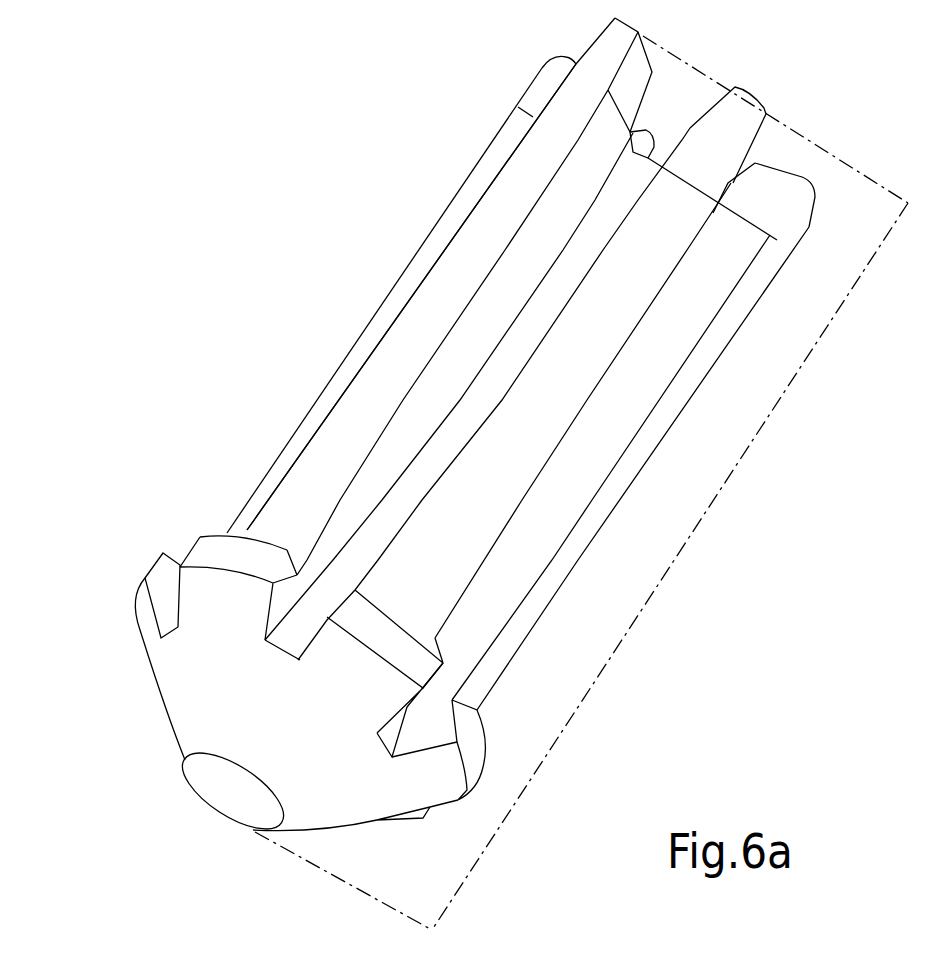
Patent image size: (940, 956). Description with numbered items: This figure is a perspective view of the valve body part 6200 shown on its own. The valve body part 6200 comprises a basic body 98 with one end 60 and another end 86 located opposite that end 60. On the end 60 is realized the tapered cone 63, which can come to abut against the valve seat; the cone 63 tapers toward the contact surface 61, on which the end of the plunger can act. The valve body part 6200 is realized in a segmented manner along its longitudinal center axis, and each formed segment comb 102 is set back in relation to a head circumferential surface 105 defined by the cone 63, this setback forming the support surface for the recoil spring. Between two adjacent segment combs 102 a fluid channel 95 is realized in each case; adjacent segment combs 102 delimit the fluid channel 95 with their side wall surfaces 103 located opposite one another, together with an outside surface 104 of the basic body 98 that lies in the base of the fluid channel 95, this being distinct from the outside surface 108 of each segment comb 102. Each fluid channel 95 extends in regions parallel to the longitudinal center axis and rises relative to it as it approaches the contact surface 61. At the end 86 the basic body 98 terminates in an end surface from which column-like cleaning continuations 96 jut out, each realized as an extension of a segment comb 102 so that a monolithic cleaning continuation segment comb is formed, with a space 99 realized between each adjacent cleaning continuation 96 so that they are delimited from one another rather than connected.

The end 86 is at (612, 19).
The space 99 is at (626, 63).
The cleaning continuation 96 is at (876, 246).
The basic body 98 is at (666, 581).
The outside surface of segment comb 108 is at (450, 267).
The side wall surface 103 is at (412, 298).
The segment comb 102 is at (566, 528).
The fluid channel 95 is at (523, 322).
The outside surface of basic body 104 is at (497, 389).
The valve body part 6200 is at (274, 461).
The head circumferential surface 105 is at (213, 556).
The end 60 is at (145, 578).
The tapered cone 63 is at (197, 703).
The contact surface 61 is at (218, 793).